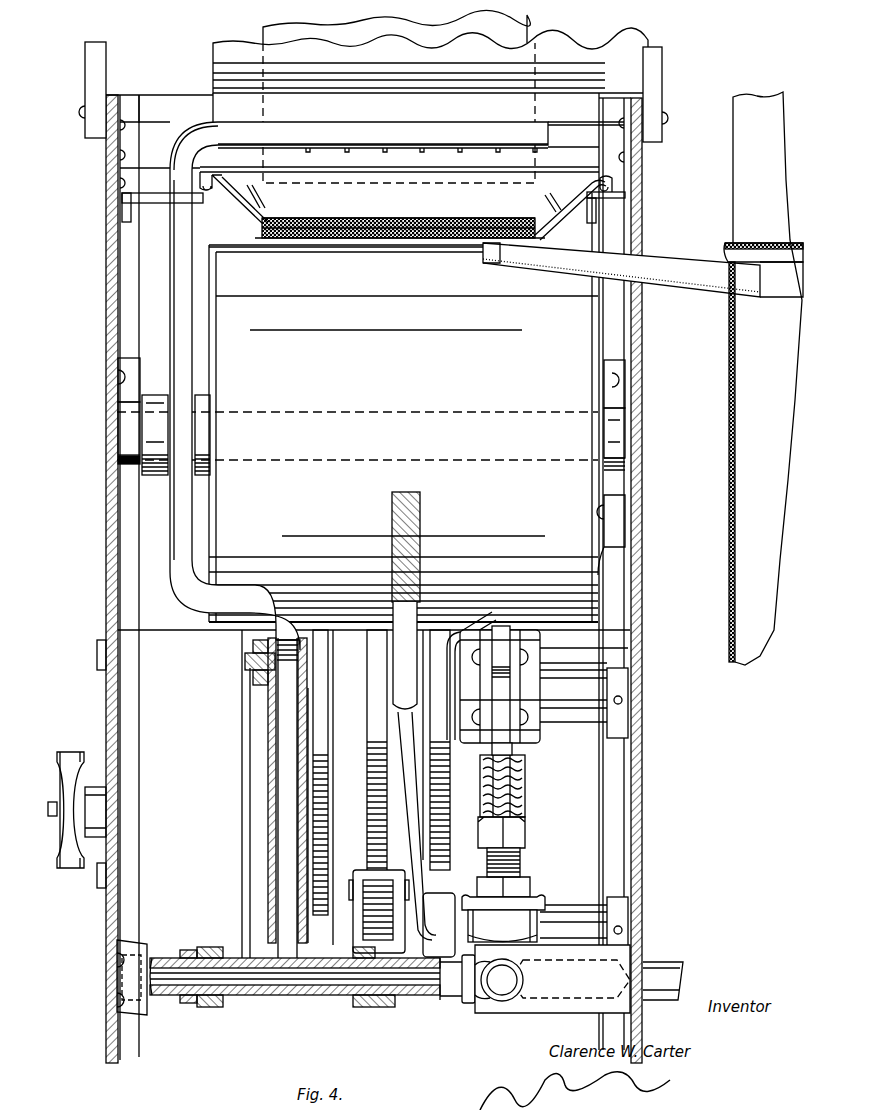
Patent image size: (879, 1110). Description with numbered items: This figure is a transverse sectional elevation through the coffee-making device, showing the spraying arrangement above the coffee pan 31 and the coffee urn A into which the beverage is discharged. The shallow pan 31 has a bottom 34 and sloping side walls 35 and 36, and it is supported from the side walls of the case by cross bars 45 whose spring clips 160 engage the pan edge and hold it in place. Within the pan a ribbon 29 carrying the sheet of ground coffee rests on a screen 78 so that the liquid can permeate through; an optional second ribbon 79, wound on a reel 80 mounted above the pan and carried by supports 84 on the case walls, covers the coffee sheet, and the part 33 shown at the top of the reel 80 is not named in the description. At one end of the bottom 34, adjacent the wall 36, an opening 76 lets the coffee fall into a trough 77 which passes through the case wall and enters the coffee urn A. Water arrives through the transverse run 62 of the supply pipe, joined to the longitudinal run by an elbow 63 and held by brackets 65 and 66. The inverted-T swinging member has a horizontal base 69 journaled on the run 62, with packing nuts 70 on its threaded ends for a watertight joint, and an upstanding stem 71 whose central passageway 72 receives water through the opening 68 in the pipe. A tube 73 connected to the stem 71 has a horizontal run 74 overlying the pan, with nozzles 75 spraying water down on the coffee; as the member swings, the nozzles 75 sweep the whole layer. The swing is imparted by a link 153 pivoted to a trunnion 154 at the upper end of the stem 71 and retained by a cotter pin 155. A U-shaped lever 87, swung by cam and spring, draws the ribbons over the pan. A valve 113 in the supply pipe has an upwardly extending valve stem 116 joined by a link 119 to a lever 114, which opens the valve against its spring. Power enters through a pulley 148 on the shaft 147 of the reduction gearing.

The supports 84 is at (88, 61).
The second ribbon 79 is at (229, 97).
The reel 80 is at (600, 52).
The sheet 33 is at (527, 30).
The horizontal run 74 is at (350, 130).
The nozzles 75 is at (493, 147).
The tube 73 is at (192, 527).
The spring clips 160 is at (197, 172).
The cross bars 45 is at (118, 182).
The ribbon 29 is at (320, 222).
The sloping side wall 35 is at (243, 215).
The coffee pan 31 is at (293, 237).
The bottom 34 is at (378, 239).
The screen 78 is at (425, 241).
The trough 77 is at (478, 250).
The opening 76 is at (521, 240).
The sloping side wall 36 is at (550, 252).
The coffee urn A is at (731, 360).
The U-shaped lever 87 is at (421, 510).
The cotter pin 155 is at (253, 647).
The trunnion 154 is at (245, 662).
The link 153 is at (253, 680).
The central passageway 72 is at (283, 737).
The upstanding stem 71 is at (267, 790).
The pulley 148 is at (55, 758).
The shaft 147 is at (48, 808).
The link 119 is at (515, 670).
The lever 114 is at (502, 668).
The valve stem 116 is at (503, 797).
The valve 113 is at (508, 890).
The bracket 65 is at (140, 948).
The transverse run 62 is at (452, 990).
The elbow 63 is at (495, 992).
The bracket 66 is at (570, 1006).
The packing nuts 70 is at (205, 1010).
The horizontal base 69 is at (237, 996).
The opening 68 is at (288, 986).